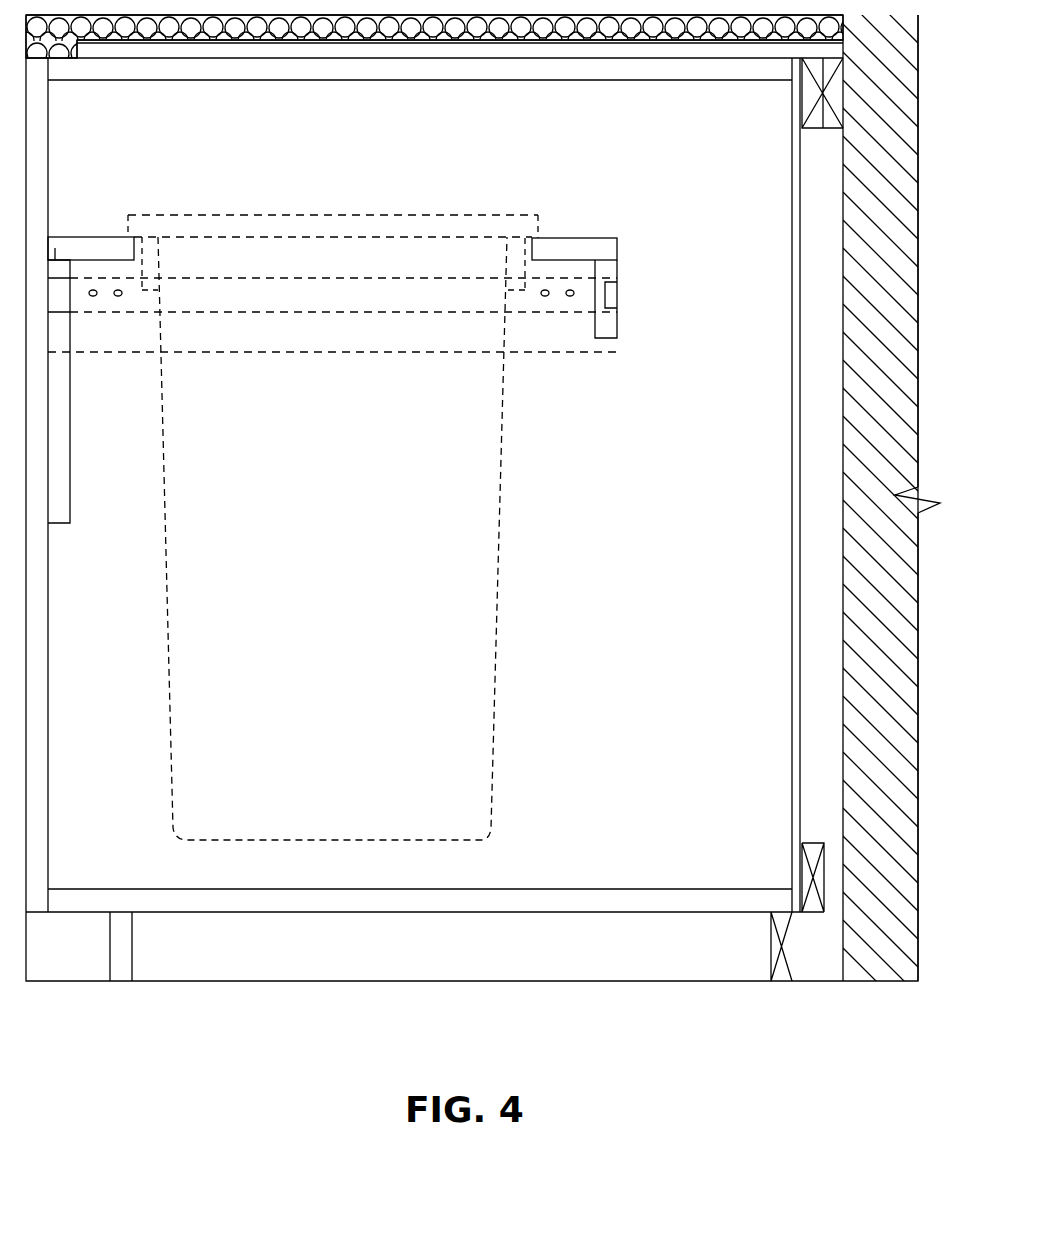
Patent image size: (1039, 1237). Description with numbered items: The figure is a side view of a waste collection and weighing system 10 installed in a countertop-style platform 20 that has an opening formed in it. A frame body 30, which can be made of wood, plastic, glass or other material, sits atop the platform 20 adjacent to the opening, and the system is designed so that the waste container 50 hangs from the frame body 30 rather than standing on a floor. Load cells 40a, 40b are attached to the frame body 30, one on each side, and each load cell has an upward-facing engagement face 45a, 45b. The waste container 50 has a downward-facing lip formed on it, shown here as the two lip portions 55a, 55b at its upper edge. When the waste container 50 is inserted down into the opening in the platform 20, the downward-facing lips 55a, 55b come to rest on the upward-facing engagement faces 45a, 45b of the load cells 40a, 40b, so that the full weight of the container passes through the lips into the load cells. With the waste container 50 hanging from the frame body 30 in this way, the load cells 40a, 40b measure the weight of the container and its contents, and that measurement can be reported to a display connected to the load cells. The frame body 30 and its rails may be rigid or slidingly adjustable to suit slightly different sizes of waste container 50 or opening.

The waste collection and weighing system 10 is at (722, 1022).
The platform 20 is at (562, 337).
The frame body 30 is at (308, 298).
The load cell 40a is at (55, 248).
The load cell 40b is at (605, 250).
The upward-facing engagement face 45a is at (120, 247).
The upward-facing engagement face 45b is at (555, 250).
The waste container 50 is at (190, 698).
The downward-facing lip 55a is at (137, 215).
The downward-facing lip 55b is at (532, 227).